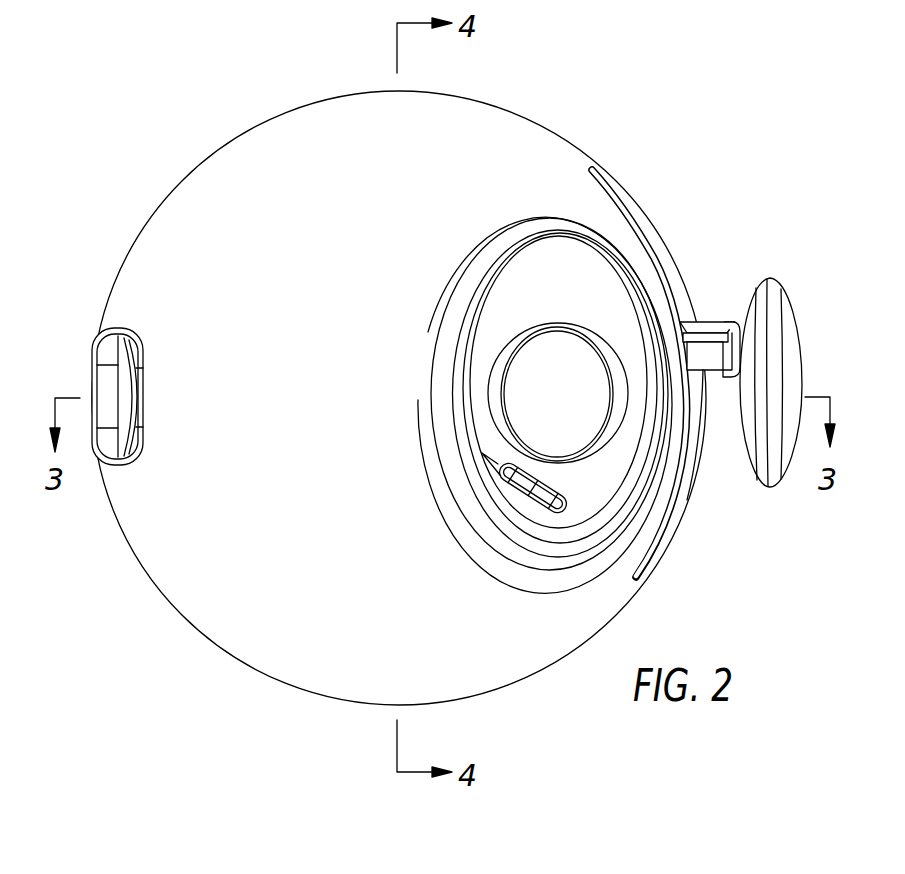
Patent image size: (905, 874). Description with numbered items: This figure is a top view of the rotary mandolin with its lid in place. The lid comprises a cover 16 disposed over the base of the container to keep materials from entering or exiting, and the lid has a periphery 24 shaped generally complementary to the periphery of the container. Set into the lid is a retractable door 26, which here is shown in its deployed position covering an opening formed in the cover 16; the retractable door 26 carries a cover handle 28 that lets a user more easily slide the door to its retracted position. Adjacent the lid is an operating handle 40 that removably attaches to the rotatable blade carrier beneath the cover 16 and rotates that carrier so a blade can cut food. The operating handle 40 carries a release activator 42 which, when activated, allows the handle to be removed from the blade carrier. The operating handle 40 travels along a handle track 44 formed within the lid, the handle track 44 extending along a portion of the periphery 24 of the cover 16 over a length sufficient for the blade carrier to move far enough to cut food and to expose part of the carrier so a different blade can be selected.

The cover 16 is at (158, 225).
The periphery 24 is at (180, 613).
The retractable door 26 is at (607, 475).
The cover handle 28 is at (547, 495).
The operating handle 40 is at (788, 333).
The release activator 42 is at (690, 322).
The handle track 44 is at (622, 200).